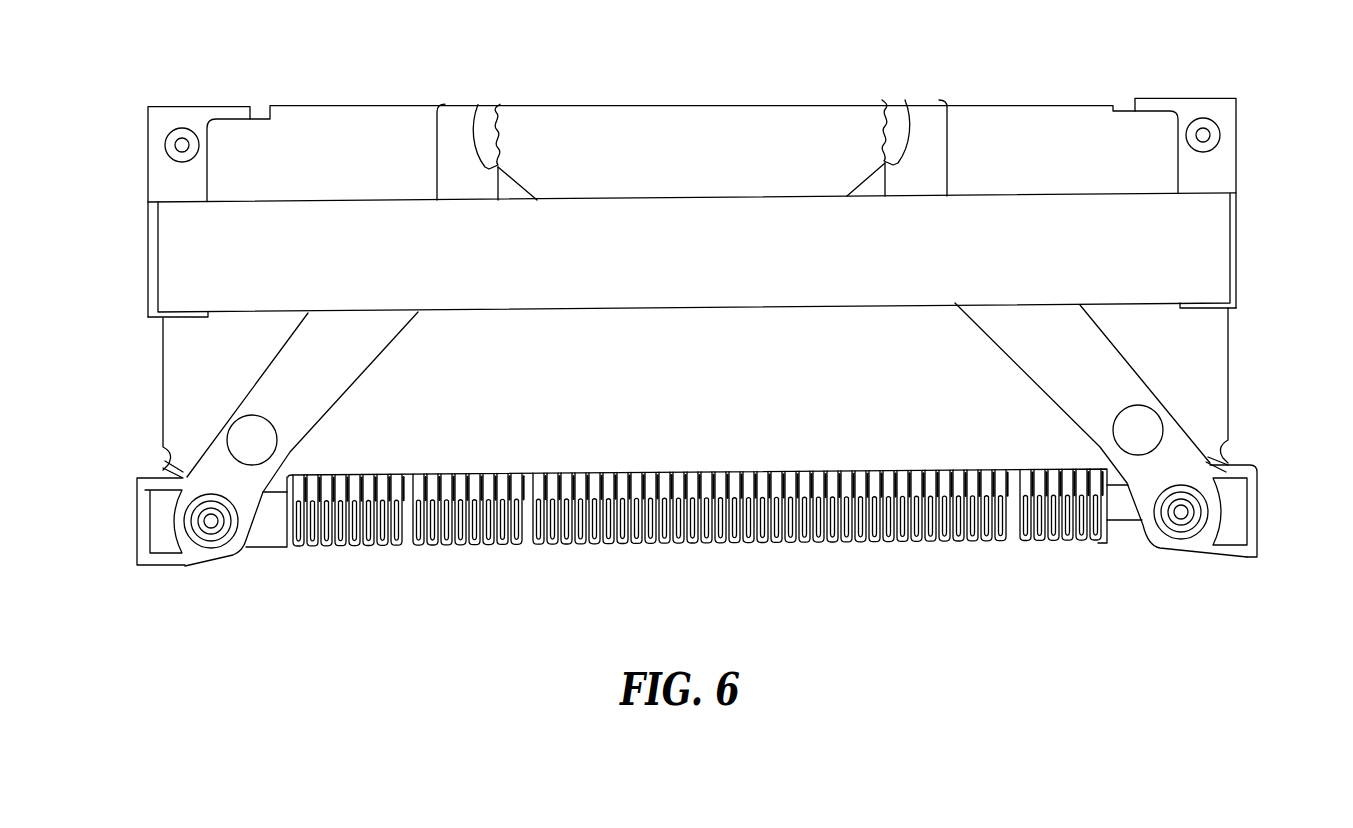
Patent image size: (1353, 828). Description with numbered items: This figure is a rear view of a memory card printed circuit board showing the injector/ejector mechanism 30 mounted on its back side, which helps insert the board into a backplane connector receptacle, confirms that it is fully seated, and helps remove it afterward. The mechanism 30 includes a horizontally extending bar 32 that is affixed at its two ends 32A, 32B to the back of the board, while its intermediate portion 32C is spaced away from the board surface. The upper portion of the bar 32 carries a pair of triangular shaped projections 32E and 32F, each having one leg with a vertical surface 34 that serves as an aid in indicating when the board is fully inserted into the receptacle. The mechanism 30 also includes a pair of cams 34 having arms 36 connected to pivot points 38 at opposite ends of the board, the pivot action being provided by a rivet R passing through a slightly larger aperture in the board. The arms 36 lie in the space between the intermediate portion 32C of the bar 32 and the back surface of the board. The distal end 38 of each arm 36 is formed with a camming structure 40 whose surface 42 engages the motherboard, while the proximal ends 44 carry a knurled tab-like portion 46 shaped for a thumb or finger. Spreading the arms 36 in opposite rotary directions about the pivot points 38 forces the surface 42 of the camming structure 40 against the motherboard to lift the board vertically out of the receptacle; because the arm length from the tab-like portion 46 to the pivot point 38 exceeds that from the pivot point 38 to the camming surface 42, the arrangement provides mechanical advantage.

The injector/ejector mechanism 30 is at (748, 130).
The horizontally extending bar 32 is at (622, 222).
The end of bar 32A is at (197, 243).
The end of bar 32B is at (1190, 233).
The intermediate portion of bar 32C is at (730, 272).
The triangular shaped projection 32E is at (513, 187).
The triangular shaped projection 32F is at (878, 180).
The cam 34 is at (495, 188).
The arm 36 is at (348, 366).
The pivot point 38 is at (262, 440).
The camming structure 40 is at (185, 566).
The camming surface 42 is at (152, 567).
The proximal end of arm 44 is at (425, 152).
The knurled tab-like portion 46 is at (472, 122).
The rivet R is at (245, 432).